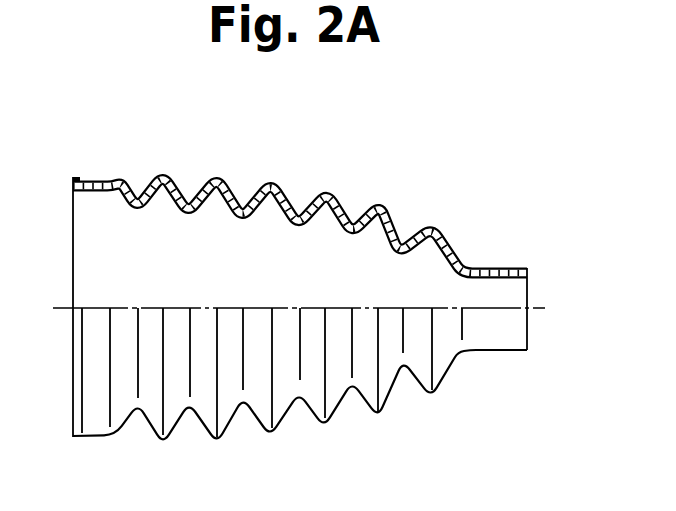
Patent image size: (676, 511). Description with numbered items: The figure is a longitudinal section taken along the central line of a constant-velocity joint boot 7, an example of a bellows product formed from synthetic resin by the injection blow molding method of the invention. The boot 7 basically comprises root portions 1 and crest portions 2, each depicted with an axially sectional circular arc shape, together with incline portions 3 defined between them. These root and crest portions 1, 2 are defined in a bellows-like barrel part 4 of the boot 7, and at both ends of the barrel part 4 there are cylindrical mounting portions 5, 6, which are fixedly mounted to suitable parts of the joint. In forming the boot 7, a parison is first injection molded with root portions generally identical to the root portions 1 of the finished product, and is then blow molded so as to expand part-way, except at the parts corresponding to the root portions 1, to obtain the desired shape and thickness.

The root portions 1 is at (298, 221).
The crest portions 2 is at (277, 181).
The incline portions 3 is at (255, 192).
The bellows-like barrel part 4 is at (445, 121).
The cylindrical mounting portion 5 is at (93, 190).
The cylindrical mounting portion 6 is at (498, 267).
The joint boot 7 is at (106, 168).